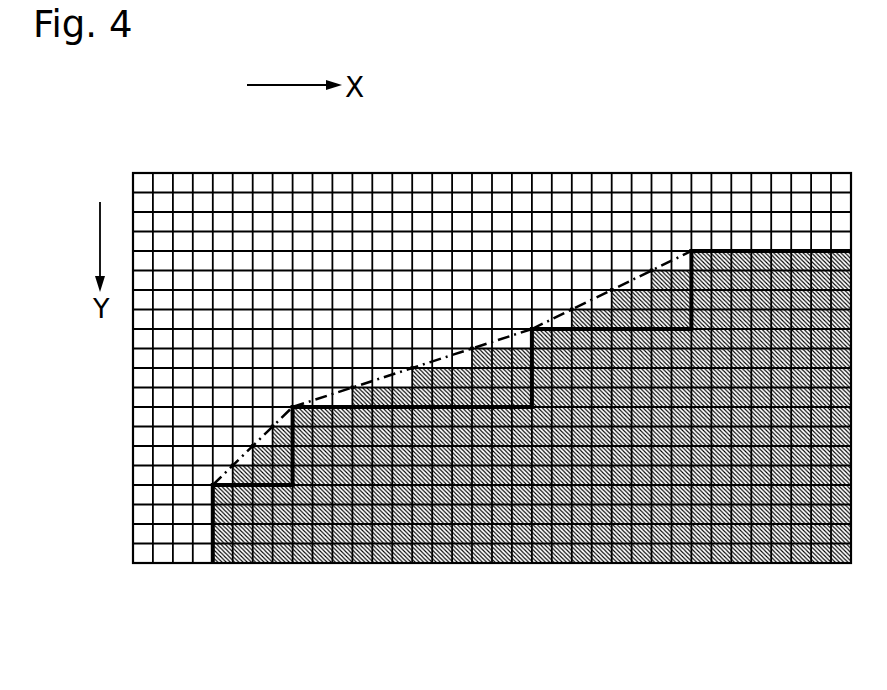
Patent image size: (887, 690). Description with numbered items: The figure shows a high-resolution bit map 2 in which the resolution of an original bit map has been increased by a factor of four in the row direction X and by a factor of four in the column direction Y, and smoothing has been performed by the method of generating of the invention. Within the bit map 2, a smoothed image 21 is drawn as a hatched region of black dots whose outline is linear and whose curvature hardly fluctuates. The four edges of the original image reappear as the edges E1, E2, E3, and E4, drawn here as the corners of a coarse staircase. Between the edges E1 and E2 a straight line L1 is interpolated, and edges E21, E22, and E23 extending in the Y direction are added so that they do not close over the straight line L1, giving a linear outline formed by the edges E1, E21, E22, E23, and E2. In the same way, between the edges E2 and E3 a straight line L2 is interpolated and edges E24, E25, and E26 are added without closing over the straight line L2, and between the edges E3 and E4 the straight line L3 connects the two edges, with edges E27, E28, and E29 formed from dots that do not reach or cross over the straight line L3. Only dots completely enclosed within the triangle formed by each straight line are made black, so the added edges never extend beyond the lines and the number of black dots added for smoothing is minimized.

The bit map 2 is at (798, 160).
The image 21 is at (680, 563).
The straight line L1 is at (243, 456).
The straight line L2 is at (437, 360).
The straight line L3 is at (633, 279).
The edge E1 is at (213, 485).
The edge E2 is at (293, 407).
The edge E3 is at (532, 329).
The edge E4 is at (691, 251).
The edge E21 is at (233, 466).
The edge E22 is at (253, 446).
The edge E23 is at (273, 426).
The edge E24 is at (352, 388).
The edge E25 is at (412, 368).
The edge E26 is at (472, 348).
The edge E27 is at (572, 310).
The edge E28 is at (612, 290).
The edge E29 is at (652, 270).